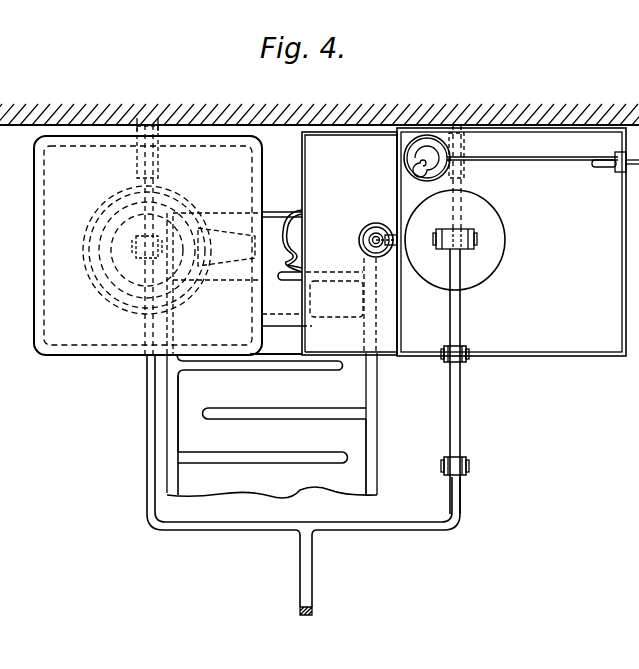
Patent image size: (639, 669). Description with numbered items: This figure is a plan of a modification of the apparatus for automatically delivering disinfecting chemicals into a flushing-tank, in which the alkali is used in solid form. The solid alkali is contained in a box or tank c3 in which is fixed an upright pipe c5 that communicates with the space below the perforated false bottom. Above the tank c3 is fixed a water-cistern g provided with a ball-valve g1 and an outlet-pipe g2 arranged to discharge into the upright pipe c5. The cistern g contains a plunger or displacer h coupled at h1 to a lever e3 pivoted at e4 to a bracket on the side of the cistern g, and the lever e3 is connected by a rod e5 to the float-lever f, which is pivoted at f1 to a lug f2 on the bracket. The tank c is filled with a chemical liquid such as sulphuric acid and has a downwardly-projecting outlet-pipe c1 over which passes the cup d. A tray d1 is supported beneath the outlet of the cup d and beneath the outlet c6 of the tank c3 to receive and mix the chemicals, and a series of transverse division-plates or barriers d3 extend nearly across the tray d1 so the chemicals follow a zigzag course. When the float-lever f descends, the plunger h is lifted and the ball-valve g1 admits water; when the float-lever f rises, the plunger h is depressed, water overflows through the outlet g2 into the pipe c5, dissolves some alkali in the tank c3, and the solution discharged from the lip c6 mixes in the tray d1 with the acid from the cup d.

The lug f2 is at (142, 125).
The pivot f1 is at (149, 154).
The tank c is at (148, 245).
The cup d is at (178, 200).
The outlet-pipe c1 is at (147, 250).
The outlet c6 is at (292, 222).
The box or tank c3 is at (349, 243).
The upright pipe c5 is at (366, 236).
The outlet-pipe g2 is at (364, 248).
The ball-valve g1 is at (597, 168).
The plunger or displacer h is at (455, 240).
The coupling h1 is at (487, 270).
The water-cistern g is at (511, 242).
The lever e3 is at (458, 322).
The pivot e4 is at (446, 364).
The rod e5 is at (468, 469).
The transverse division-plates or barriers d3 is at (272, 371).
The tray d1 is at (386, 429).
The float-lever f is at (305, 548).